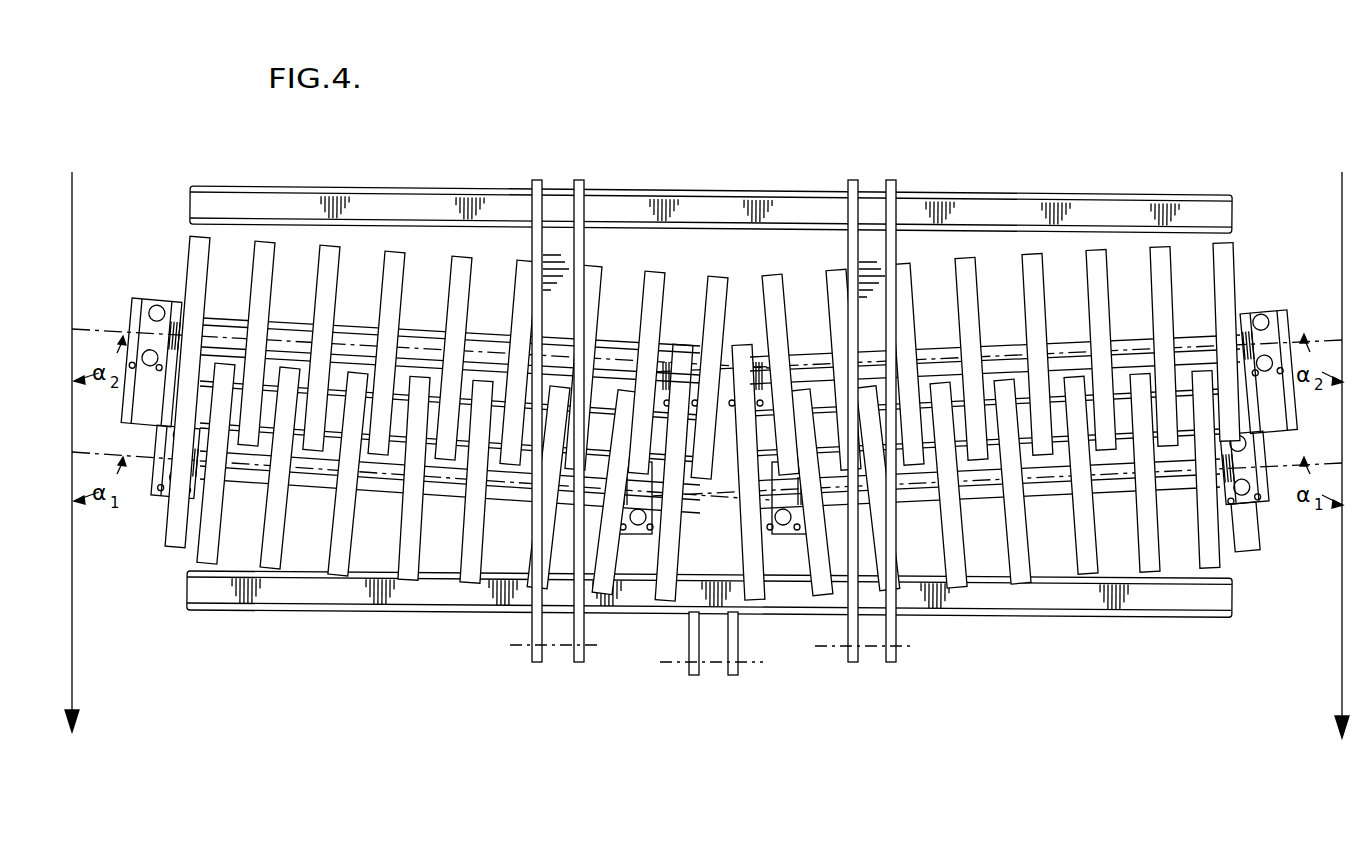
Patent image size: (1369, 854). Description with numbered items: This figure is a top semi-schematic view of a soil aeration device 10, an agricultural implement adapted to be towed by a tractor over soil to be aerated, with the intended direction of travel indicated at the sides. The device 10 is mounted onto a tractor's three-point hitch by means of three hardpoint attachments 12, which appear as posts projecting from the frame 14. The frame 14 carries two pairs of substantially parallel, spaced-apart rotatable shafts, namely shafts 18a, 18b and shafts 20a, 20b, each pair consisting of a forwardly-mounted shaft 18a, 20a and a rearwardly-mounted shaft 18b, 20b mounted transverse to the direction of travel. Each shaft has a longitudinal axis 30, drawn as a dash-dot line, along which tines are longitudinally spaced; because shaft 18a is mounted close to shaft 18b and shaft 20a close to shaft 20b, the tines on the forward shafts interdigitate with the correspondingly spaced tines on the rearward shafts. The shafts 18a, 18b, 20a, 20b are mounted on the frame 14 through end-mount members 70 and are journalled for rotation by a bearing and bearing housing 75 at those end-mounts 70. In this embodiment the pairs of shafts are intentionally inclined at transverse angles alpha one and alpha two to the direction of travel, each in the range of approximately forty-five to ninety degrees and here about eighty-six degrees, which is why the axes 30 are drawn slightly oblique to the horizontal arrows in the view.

The soil aeration device 10 is at (1180, 140).
The hardpoint attachments 12 is at (583, 662).
The frame 14 is at (775, 210).
The forwardly-mounted rotatable shaft 18a is at (1040, 495).
The rearwardly-mounted rotatable shaft 18b is at (1003, 350).
The forwardly-mounted rotatable shaft 20a is at (435, 500).
The rearwardly-mounted rotatable shaft 20b is at (372, 345).
The longitudinal axis 30 is at (100, 329).
The end-mount members 70 is at (1260, 502).
The bearing and bearing housing 75 is at (1288, 322).